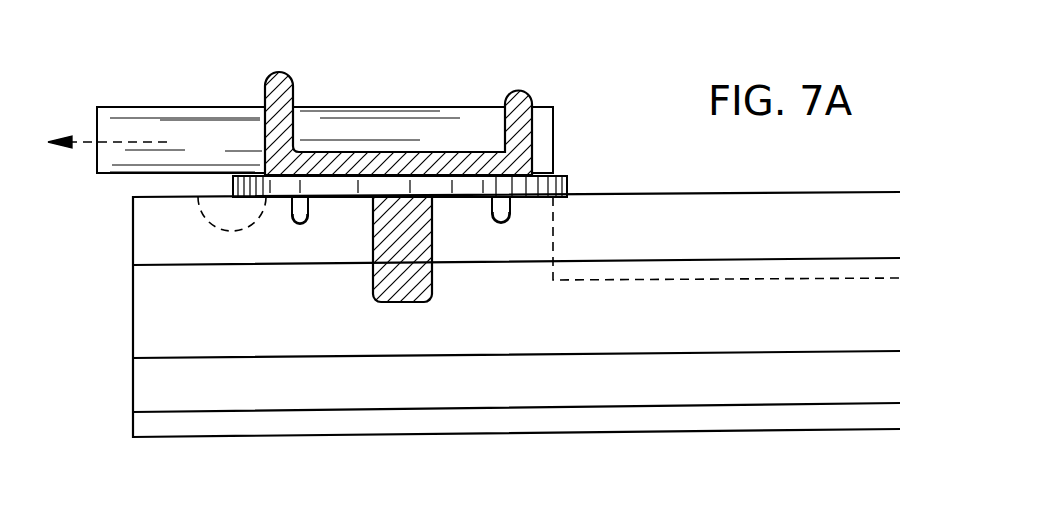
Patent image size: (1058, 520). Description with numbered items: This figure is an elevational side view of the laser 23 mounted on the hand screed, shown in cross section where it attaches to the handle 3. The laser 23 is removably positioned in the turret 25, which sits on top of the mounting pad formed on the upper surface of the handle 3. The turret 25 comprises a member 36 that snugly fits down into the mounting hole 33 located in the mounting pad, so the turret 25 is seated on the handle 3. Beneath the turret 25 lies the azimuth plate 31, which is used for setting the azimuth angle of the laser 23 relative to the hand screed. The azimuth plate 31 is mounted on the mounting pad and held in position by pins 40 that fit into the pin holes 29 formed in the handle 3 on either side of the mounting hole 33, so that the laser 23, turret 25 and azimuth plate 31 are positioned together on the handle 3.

The handle 3 is at (153, 333).
The laser 23 is at (362, 122).
The turret 25 is at (282, 82).
The pin holes 29 is at (300, 220).
The azimuth plate 31 is at (568, 162).
The mounting hole 33 is at (435, 292).
The member 36 is at (380, 300).
The pins 40 is at (306, 225).